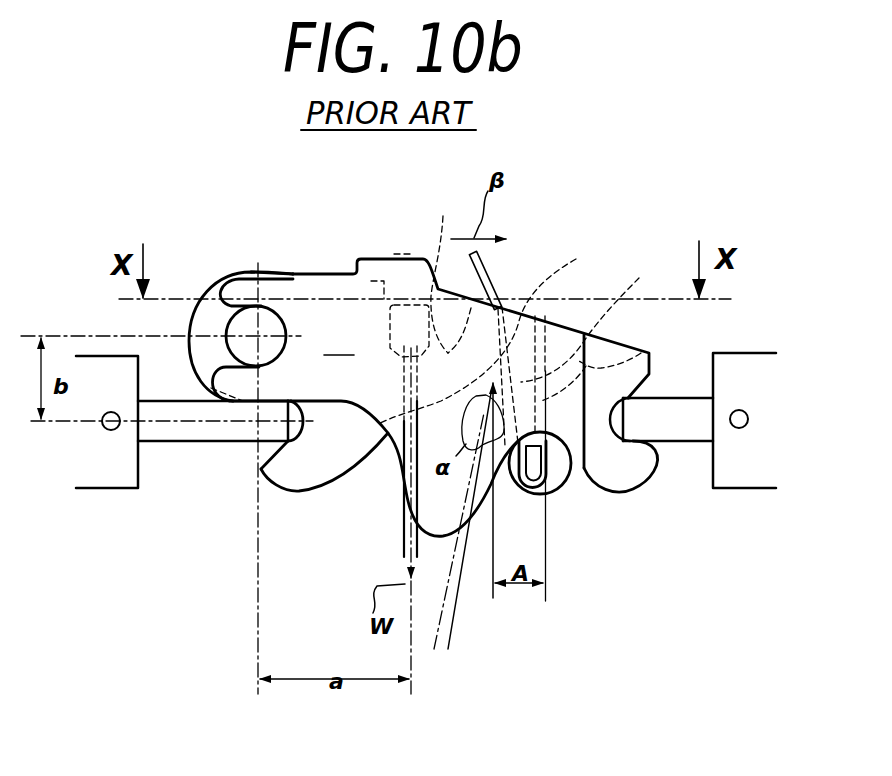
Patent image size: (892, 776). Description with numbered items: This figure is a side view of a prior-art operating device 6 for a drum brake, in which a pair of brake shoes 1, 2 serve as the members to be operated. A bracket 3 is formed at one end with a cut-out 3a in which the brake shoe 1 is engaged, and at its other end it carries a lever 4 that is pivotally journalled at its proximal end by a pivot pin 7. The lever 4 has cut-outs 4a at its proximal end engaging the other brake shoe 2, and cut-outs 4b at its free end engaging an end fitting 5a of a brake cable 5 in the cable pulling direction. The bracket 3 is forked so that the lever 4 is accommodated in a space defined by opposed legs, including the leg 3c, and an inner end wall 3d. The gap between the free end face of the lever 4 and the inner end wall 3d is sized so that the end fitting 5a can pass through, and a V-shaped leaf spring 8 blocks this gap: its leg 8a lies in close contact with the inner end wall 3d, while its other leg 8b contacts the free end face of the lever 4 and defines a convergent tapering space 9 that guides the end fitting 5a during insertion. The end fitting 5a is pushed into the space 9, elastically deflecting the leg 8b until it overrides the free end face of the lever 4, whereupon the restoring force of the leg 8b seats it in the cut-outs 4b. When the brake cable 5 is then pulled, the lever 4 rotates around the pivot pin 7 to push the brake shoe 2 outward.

The brake shoe 1 is at (747, 489).
The brake shoe 2 is at (107, 489).
The bracket 3 is at (402, 257).
The cut-out 3a is at (622, 417).
The leg 3c is at (339, 343).
The inner end wall 3d is at (640, 352).
The lever 4 is at (300, 491).
The cut-outs 4a is at (283, 433).
The cut-outs 4b is at (448, 271).
The brake cable 5 is at (401, 501).
The end fitting 5a is at (415, 300).
The operating device 6 is at (287, 262).
The pivot pin 7 is at (236, 322).
The V-shaped leaf spring 8 is at (554, 493).
The leg of the leaf spring 8a is at (490, 328).
The leg of the leaf spring 8b is at (492, 277).
The convergent tapering space 9 is at (587, 327).